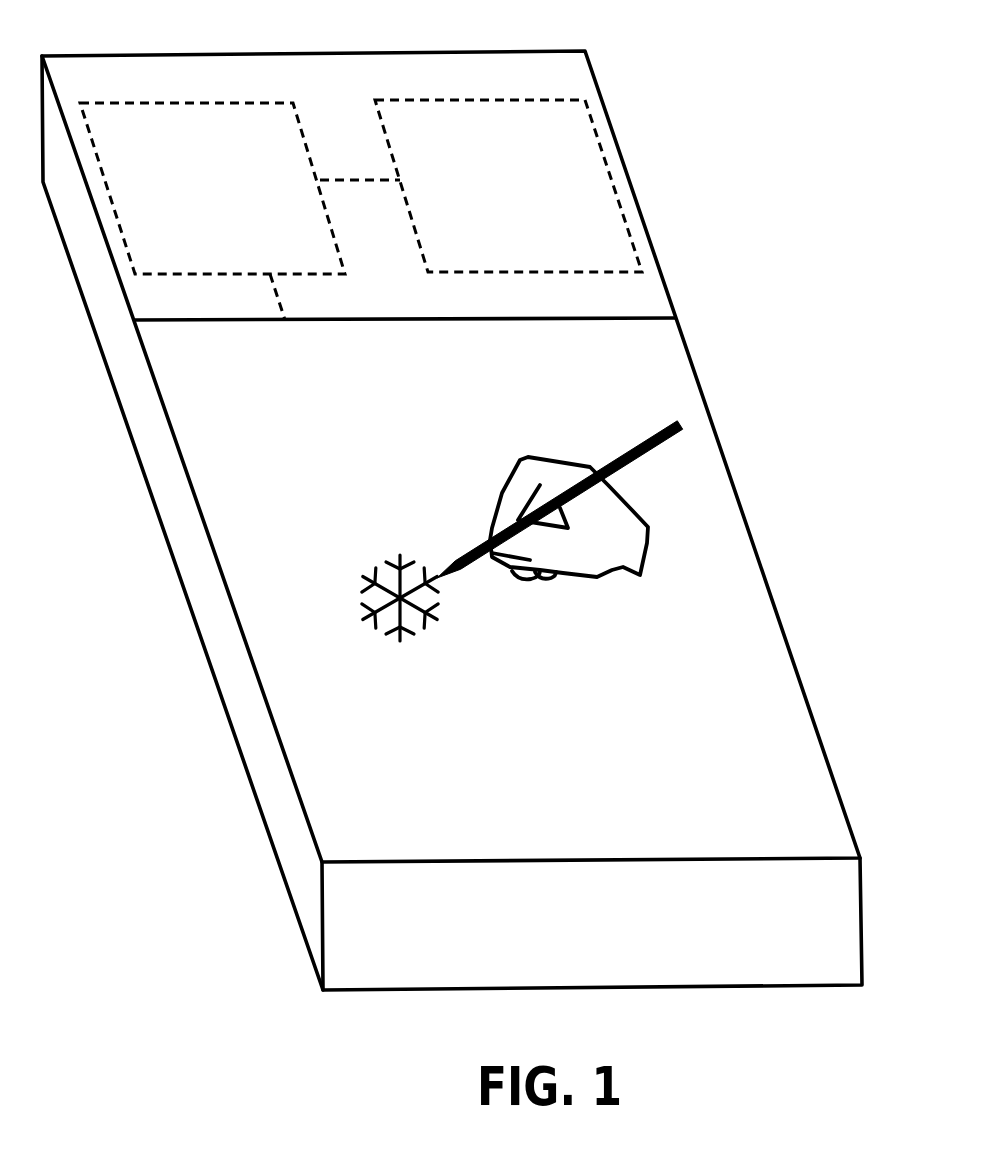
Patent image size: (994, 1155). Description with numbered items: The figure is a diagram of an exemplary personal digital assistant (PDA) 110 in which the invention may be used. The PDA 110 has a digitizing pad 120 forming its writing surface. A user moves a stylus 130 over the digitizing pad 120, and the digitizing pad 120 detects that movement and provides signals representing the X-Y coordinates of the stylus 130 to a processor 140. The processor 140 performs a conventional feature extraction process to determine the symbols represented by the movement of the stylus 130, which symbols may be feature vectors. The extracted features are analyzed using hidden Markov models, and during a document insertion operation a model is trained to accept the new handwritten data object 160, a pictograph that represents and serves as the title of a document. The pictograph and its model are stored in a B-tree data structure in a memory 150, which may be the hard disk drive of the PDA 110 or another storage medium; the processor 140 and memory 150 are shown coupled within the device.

The personal digital assistant 110 is at (777, 309).
The digitizing pad 120 is at (753, 713).
The stylus 130 is at (623, 452).
The processor 140 is at (153, 100).
The memory 150 is at (427, 99).
The handwritten data object 160 is at (370, 583).